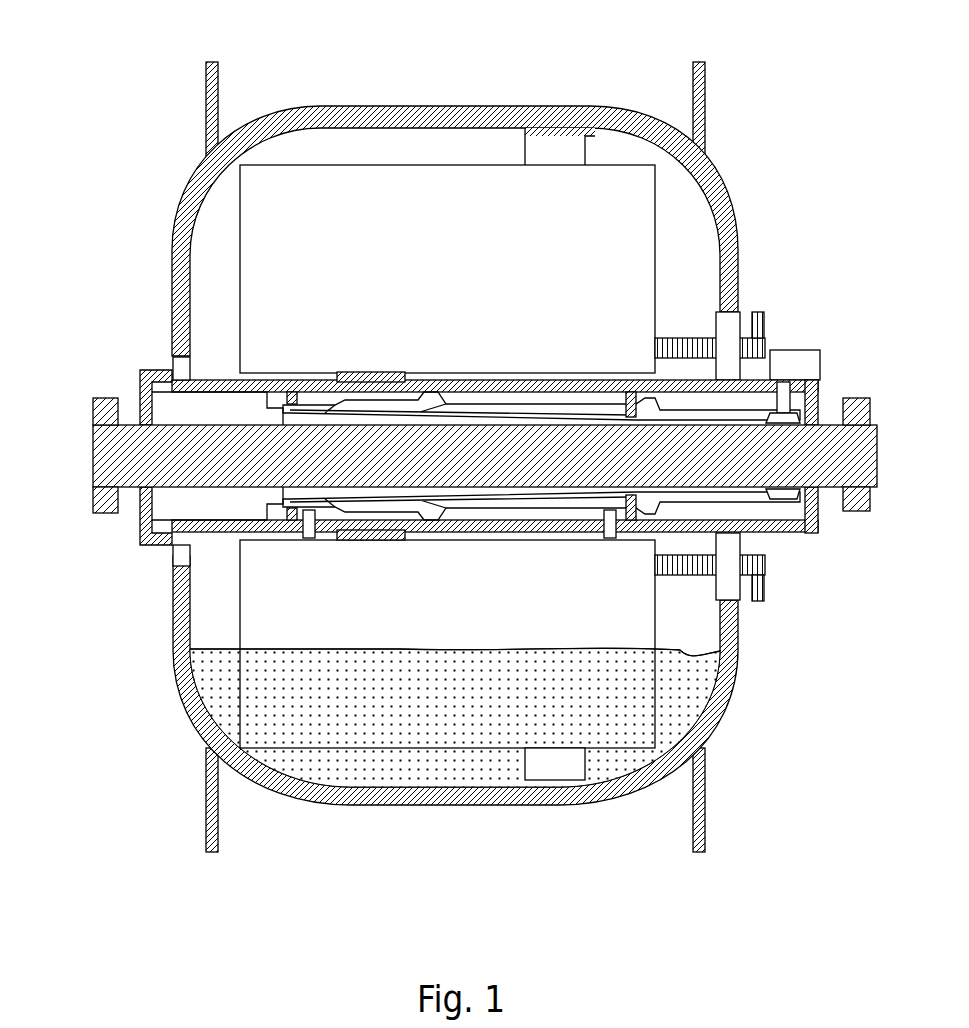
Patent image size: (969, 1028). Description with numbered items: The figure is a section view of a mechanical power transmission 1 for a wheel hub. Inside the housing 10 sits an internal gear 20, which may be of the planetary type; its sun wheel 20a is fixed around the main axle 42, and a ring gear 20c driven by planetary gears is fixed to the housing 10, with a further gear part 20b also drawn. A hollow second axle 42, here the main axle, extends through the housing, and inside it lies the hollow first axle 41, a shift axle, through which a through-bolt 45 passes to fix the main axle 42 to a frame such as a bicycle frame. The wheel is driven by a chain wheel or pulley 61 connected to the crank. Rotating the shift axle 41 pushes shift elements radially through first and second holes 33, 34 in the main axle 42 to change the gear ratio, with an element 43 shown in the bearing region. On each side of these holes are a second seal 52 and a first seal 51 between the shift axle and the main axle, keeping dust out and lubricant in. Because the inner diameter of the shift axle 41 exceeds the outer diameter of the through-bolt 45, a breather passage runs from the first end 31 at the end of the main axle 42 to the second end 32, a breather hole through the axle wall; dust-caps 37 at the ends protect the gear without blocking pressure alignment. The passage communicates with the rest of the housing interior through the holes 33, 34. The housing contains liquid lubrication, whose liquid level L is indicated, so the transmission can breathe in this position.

The mechanical power transmission 1 is at (452, 432).
The housing 10 is at (386, 108).
The internal gear 20 is at (340, 219).
The sun wheel 20a is at (361, 380).
The motor ribbed plate 20b is at (710, 444).
The ring gear 20c is at (560, 449).
The first end 31 is at (133, 396).
The second end 32 is at (453, 505).
The first hole 33 is at (300, 540).
The second hole 34 is at (610, 540).
The dust-cap 37 is at (172, 362).
The first axle 41 is at (762, 500).
The second axle 42 is at (797, 533).
The upper bearing foil 43 is at (425, 392).
The through-bolt 45 is at (734, 469).
The first seal 51 is at (638, 392).
The second seal 52 is at (205, 407).
The chain wheel or pulley 61 is at (758, 312).
The liquid level L is at (683, 657).